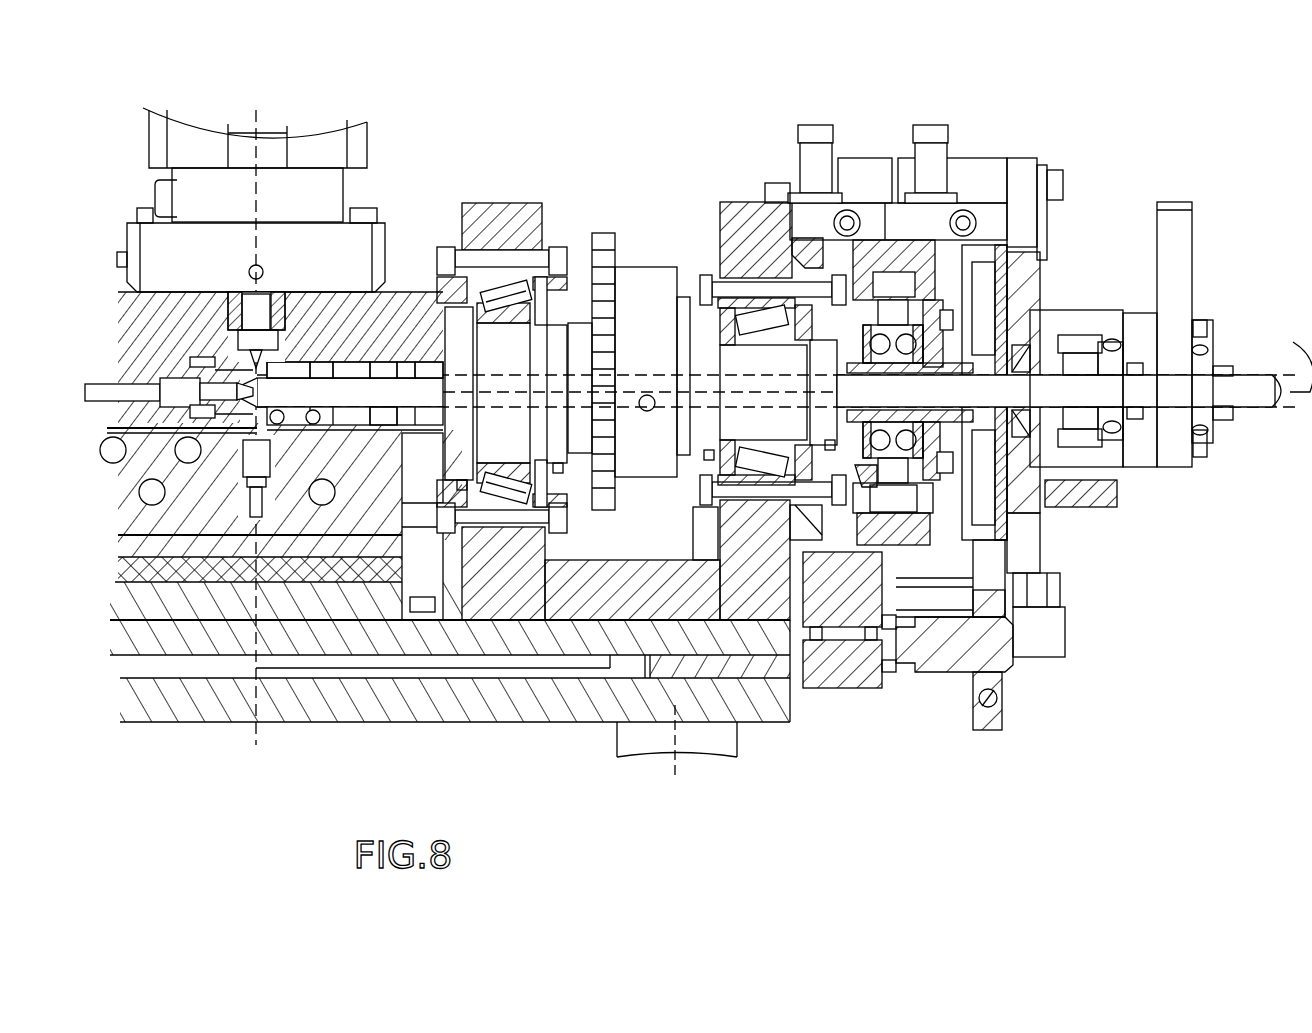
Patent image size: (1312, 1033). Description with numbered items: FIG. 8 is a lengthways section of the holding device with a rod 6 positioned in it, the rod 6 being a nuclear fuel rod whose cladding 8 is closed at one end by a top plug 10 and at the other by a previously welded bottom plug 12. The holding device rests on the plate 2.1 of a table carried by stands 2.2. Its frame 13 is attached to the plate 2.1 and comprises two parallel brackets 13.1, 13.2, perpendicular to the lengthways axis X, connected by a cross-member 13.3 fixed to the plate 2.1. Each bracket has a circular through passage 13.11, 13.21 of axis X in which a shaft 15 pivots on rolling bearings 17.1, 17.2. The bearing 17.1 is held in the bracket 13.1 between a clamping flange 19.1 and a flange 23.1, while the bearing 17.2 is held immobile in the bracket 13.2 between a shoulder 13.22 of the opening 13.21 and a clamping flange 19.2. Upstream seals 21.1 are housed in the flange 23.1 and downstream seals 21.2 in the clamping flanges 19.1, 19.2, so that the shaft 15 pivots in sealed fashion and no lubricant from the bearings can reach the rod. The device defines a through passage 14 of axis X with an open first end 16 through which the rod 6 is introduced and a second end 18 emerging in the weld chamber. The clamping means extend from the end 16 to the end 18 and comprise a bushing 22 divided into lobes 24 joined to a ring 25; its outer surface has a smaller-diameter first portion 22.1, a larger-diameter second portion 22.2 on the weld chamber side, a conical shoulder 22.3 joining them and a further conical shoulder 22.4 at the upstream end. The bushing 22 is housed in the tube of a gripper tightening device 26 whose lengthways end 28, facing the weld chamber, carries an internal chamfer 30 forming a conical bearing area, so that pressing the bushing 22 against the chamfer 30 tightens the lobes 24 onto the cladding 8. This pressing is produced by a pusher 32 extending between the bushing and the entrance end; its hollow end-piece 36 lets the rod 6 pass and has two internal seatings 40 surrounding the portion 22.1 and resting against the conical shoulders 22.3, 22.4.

The plate 2.1 is at (273, 714).
The stands 2.2 is at (707, 752).
The rod 6 is at (397, 422).
The cladding 8 is at (1137, 395).
The top plug 10 is at (250, 388).
The bottom plug 12 is at (1283, 408).
The frame 13 is at (771, 622).
The bracket 13.1 is at (748, 710).
The circular through passage 13.11 is at (750, 300).
The bracket 13.2 is at (530, 250).
The circular through passage 13.21 is at (505, 498).
The shoulder 13.22 is at (510, 250).
The cross-member 13.3 is at (652, 568).
The through passage 14 is at (1010, 405).
The shaft 15 is at (625, 268).
The first lengthways end 16 is at (1026, 372).
The rolling bearing 17.1 is at (777, 312).
The rolling bearing 17.2 is at (503, 290).
The second lengthways end 18 is at (257, 414).
The clamping flange 19.1 is at (705, 262).
The clamping flange 19.2 is at (458, 250).
The upstream seal 21.1 is at (556, 468).
The downstream seal 21.2 is at (462, 487).
The bushing 22 is at (300, 427).
The first portion of smaller diameter 22.1 is at (330, 366).
The second portion of larger diameter 22.2 is at (290, 366).
The conical shoulder 22.3 is at (313, 366).
The conical shoulder 22.4 is at (370, 366).
The flange 23.1 is at (558, 295).
The lobes 24 is at (255, 378).
The ring 25 is at (367, 408).
The gripper tightening device 26 is at (357, 366).
The lengthways end 28 is at (275, 435).
The internal chamfer 30 is at (288, 432).
The pusher 32 is at (985, 325).
The end-piece 36 is at (402, 366).
The internal seatings 40 is at (298, 428).
The lengthways axis X is at (1291, 360).